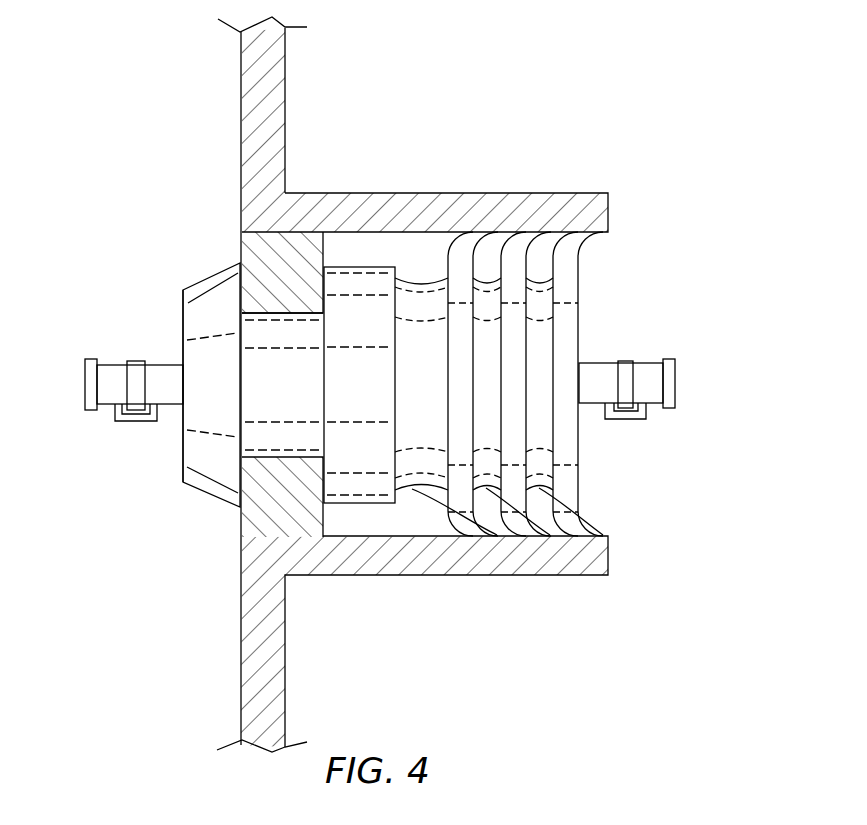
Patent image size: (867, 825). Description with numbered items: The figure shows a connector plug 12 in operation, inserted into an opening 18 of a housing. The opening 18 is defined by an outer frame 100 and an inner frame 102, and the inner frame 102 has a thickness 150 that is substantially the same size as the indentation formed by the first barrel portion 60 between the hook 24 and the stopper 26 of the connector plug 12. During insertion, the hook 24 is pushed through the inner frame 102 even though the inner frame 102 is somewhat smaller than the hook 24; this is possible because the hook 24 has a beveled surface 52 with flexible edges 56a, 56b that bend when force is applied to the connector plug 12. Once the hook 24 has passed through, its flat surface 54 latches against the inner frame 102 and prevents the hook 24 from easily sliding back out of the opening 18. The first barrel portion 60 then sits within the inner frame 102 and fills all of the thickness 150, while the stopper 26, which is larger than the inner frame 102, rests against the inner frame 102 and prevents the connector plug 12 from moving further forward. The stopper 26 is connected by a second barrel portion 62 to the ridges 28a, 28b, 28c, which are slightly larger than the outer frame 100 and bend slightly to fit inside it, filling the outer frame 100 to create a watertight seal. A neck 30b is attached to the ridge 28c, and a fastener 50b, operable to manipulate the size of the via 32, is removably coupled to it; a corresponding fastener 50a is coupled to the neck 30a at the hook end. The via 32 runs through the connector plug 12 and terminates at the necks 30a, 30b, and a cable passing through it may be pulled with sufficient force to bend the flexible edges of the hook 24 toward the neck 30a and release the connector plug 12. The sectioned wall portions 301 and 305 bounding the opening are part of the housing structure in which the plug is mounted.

The connector plug 12 is at (487, 350).
The opening 18 is at (421, 243).
The hook 24 is at (176, 393).
The stopper 26 is at (357, 283).
The ridge 28a is at (481, 240).
The ridge 28b is at (533, 243).
The ridge 28c is at (566, 287).
The neck 30a is at (108, 363).
The neck 30b is at (650, 361).
The via 32 is at (85, 383).
The fastener 50a is at (133, 421).
The fastener 50b is at (628, 419).
The beveled surface 52 is at (183, 294).
The flat surface 54 is at (247, 290).
The flexible edge 56a is at (200, 274).
The flexible edge 56b is at (187, 487).
The first barrel portion 60 is at (297, 394).
The second barrel portion 62 is at (578, 504).
The outer frame 100 is at (608, 213).
The inner frame 102 is at (262, 262).
The inner frame thickness 150 is at (323, 494).
The wall 301 is at (285, 90).
The bottom flange 305 is at (513, 575).